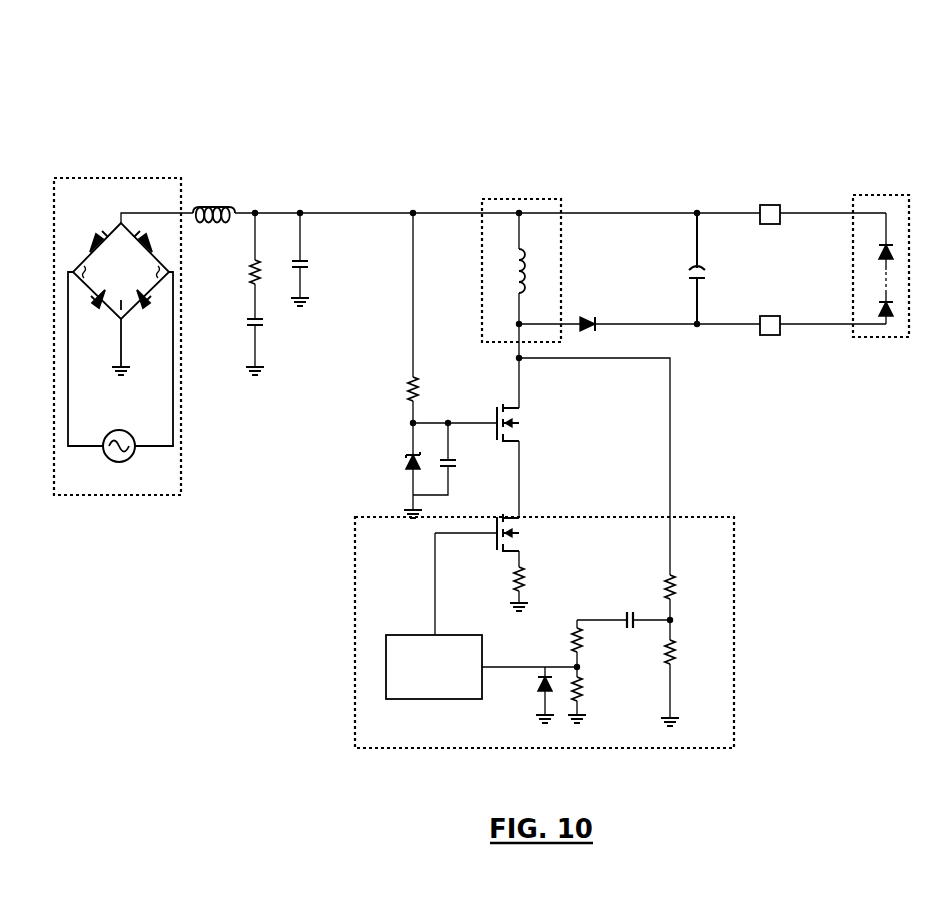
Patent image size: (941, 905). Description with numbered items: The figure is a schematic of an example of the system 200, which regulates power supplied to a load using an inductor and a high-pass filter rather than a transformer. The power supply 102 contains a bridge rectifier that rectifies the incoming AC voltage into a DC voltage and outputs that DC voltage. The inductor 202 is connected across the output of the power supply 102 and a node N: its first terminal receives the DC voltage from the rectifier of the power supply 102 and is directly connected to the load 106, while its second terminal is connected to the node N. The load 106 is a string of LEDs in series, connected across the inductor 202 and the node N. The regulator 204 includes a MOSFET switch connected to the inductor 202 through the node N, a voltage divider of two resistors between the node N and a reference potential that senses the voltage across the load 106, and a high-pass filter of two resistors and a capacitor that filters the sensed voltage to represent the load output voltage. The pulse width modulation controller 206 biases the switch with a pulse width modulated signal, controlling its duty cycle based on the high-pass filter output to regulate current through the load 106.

The system 200 is at (545, 84).
The power supply 102 is at (125, 178).
The inductor 202 is at (531, 199).
The load 106 is at (888, 195).
The regulator 204 is at (735, 635).
The pulse width modulation controller 206 is at (450, 635).